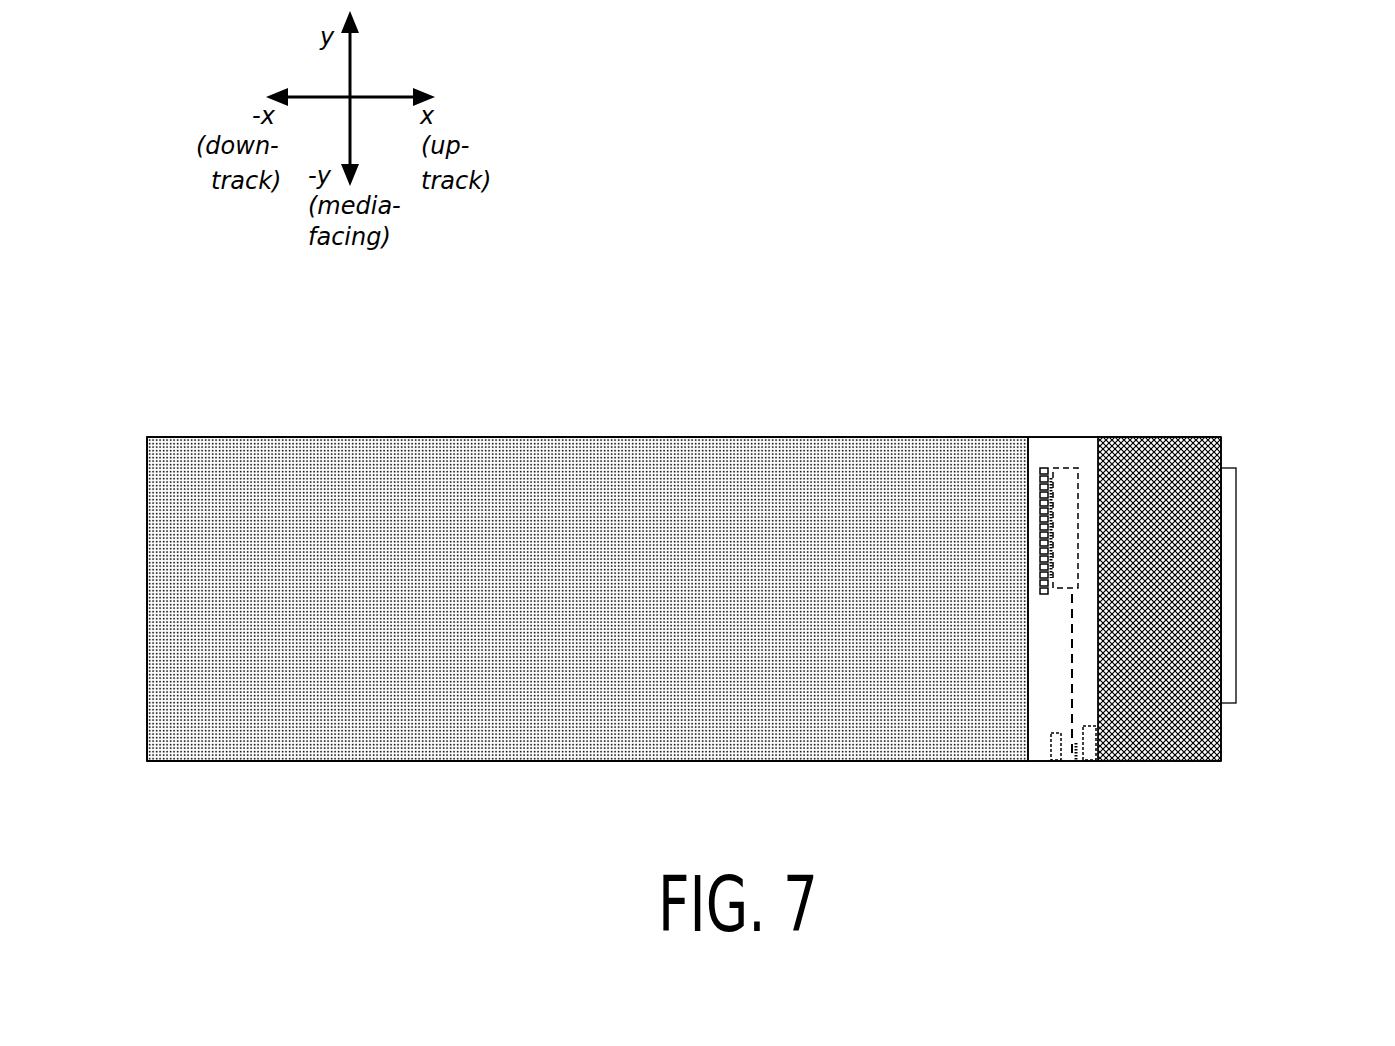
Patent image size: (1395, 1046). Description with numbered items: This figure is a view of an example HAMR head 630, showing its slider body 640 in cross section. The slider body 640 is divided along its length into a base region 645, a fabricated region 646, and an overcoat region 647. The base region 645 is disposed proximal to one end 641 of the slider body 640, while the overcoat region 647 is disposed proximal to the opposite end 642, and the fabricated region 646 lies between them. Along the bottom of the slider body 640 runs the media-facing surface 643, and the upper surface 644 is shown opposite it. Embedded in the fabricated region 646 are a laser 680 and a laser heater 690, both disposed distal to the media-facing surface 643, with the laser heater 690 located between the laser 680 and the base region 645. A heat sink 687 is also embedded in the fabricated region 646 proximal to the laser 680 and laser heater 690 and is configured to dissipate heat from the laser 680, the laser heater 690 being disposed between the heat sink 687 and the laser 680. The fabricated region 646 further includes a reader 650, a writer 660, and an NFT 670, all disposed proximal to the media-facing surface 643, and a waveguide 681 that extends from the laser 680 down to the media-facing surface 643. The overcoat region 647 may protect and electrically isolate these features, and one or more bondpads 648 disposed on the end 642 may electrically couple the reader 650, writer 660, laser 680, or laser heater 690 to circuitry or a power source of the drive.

The HAMR head 630 is at (1250, 212).
The slider body 640 is at (215, 478).
The end 641 is at (120, 545).
The end 642 is at (1280, 568).
The media-facing surface 643 is at (652, 770).
The top surface 644 is at (445, 420).
The base region 645 is at (447, 723).
The fabricated region 646 is at (1020, 712).
The overcoat region 647 is at (1188, 720).
The bondpads 648 is at (1220, 505).
The reader 650 is at (1048, 752).
The writer 660 is at (1085, 752).
The NFT 670 is at (1072, 752).
The laser 680 is at (1057, 485).
The waveguide 681 is at (1063, 635).
The heat sink 687 is at (1030, 470).
The laser heater 690 is at (1045, 475).